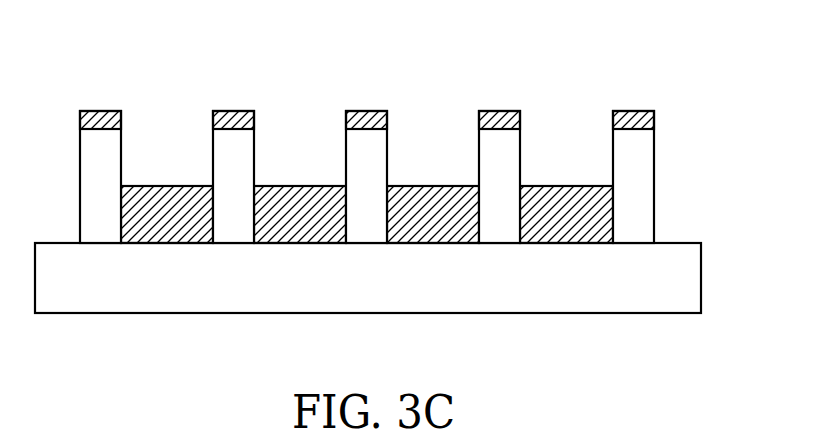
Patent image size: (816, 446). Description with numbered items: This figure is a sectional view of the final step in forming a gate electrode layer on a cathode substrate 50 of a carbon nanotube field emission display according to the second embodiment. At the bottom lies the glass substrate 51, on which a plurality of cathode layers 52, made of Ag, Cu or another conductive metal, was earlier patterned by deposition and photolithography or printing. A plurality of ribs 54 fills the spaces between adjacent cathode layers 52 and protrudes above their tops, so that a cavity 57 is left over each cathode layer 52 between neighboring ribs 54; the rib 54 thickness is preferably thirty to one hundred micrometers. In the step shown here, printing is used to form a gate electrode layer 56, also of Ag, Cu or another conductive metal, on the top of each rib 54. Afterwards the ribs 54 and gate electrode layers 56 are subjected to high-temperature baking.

The cathode substrate 50 is at (405, 202).
The glass substrate 51 is at (683, 280).
The cathode layer 52 is at (593, 215).
The rib 54 is at (635, 175).
The gate electrode layer 56 is at (654, 119).
The cavity 57 is at (565, 157).